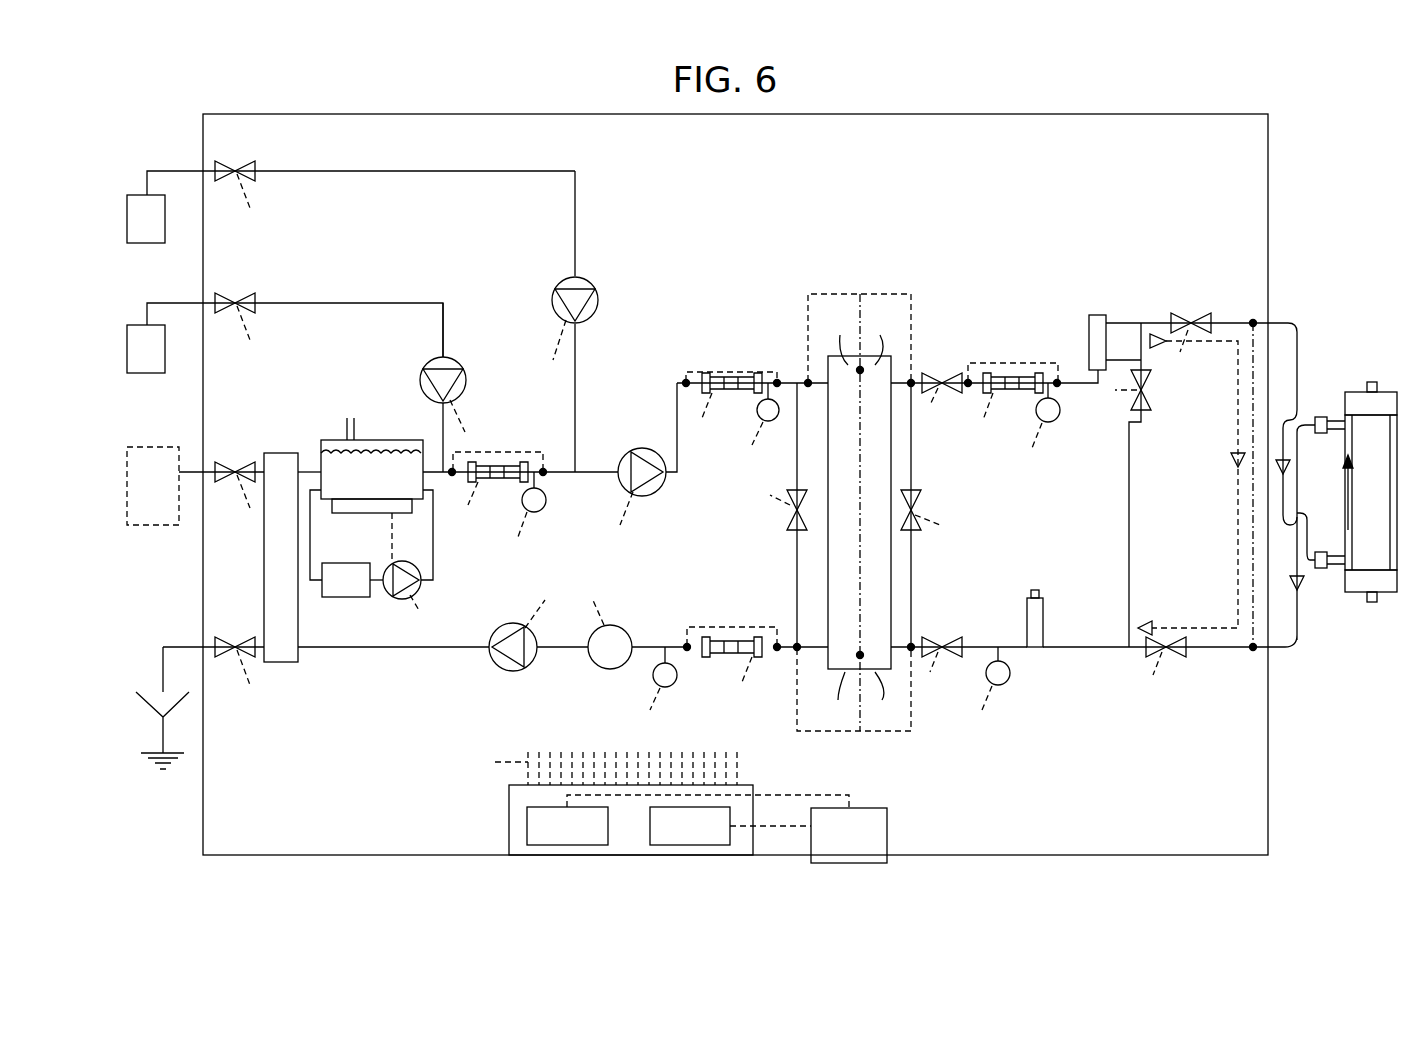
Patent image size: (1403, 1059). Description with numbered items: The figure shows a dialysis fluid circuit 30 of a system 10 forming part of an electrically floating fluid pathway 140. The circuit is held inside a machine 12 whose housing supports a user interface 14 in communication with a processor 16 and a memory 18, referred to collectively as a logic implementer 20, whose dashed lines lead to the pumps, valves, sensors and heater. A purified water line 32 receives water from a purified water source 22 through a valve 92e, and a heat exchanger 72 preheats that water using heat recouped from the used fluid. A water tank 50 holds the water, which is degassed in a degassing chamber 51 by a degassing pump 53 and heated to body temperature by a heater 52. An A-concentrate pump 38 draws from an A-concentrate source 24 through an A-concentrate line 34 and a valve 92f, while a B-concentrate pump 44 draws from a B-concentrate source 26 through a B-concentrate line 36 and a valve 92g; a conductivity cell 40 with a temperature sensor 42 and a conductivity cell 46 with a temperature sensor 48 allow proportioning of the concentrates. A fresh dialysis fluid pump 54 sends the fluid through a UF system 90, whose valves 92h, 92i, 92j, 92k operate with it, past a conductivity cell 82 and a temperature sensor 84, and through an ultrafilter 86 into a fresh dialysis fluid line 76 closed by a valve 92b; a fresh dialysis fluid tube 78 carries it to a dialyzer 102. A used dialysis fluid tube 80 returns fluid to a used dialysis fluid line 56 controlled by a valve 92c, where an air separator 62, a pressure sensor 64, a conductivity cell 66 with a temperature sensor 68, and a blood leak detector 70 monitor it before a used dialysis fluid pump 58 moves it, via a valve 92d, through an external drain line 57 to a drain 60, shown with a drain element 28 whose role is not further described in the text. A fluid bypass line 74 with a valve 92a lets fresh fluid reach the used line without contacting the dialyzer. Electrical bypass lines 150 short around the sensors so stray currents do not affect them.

The system 10 is at (243, 100).
The machine 12 is at (1268, 114).
The user interface 14 is at (727, 829).
The processor 16 is at (567, 826).
The memory 18 is at (730, 826).
The logic implementer 20 is at (753, 785).
The purified water source 22 is at (195, 486).
The A-concentrate source 24 is at (140, 323).
The B-concentrate source 26 is at (140, 193).
The drain 28 is at (158, 770).
The dialysis fluid circuit 30 is at (913, 225).
The purified water line 32 is at (308, 470).
The A-concentrate line 34 is at (437, 303).
The B-concentrate line 36 is at (518, 175).
The A-concentrate pump 38 is at (466, 370).
The conductivity cell 40 is at (500, 482).
The temperature sensor 42 is at (540, 515).
The B-concentrate pump 44 is at (600, 300).
The conductivity cell 46 is at (740, 395).
The temperature sensor 48 is at (773, 425).
The water tank 50 is at (370, 438).
The degassing chamber 51 is at (345, 597).
The heater 52 is at (365, 513).
The degassing pump 53 is at (400, 600).
The fresh dialysis fluid pump 54 is at (652, 500).
The used dialysis fluid line 56 is at (358, 650).
The external drain line 57 is at (185, 645).
The used dialysis fluid pump 58 is at (500, 670).
The drain 60 is at (163, 735).
The air separator 62 is at (1038, 598).
The pressure sensor 64 is at (1003, 690).
The conductivity cell 66 is at (730, 660).
The temperature sensor 68 is at (655, 680).
The blood leak detector 70 is at (618, 625).
The heat exchanger 72 is at (275, 577).
The fluid bypass line 74 is at (1131, 510).
The fresh dialysis fluid line 76 is at (603, 478).
The fresh dialysis fluid tube 78 is at (1300, 345).
The used dialysis fluid tube 80 is at (1300, 640).
The conductivity cell 82 is at (1020, 395).
The temperature sensor 84 is at (1055, 425).
The ultrafilter 86 is at (1089, 330).
The UF system 90 is at (891, 572).
The valve 92a is at (1148, 400).
The valve 92b is at (1195, 320).
The valve 92c is at (1170, 652).
The valve 92d is at (236, 650).
The valve 92e is at (236, 468).
The valve 92f is at (238, 300).
The valve 92g is at (236, 168).
The valve 92h is at (790, 512).
The valve 92i is at (945, 375).
The valve 92j is at (918, 508).
The valve 92k is at (945, 640).
The dialyzer 102 is at (1372, 382).
The electrically floating fluid pathway 140 is at (1296, 323).
The electrical bypass lines 150 is at (520, 450).